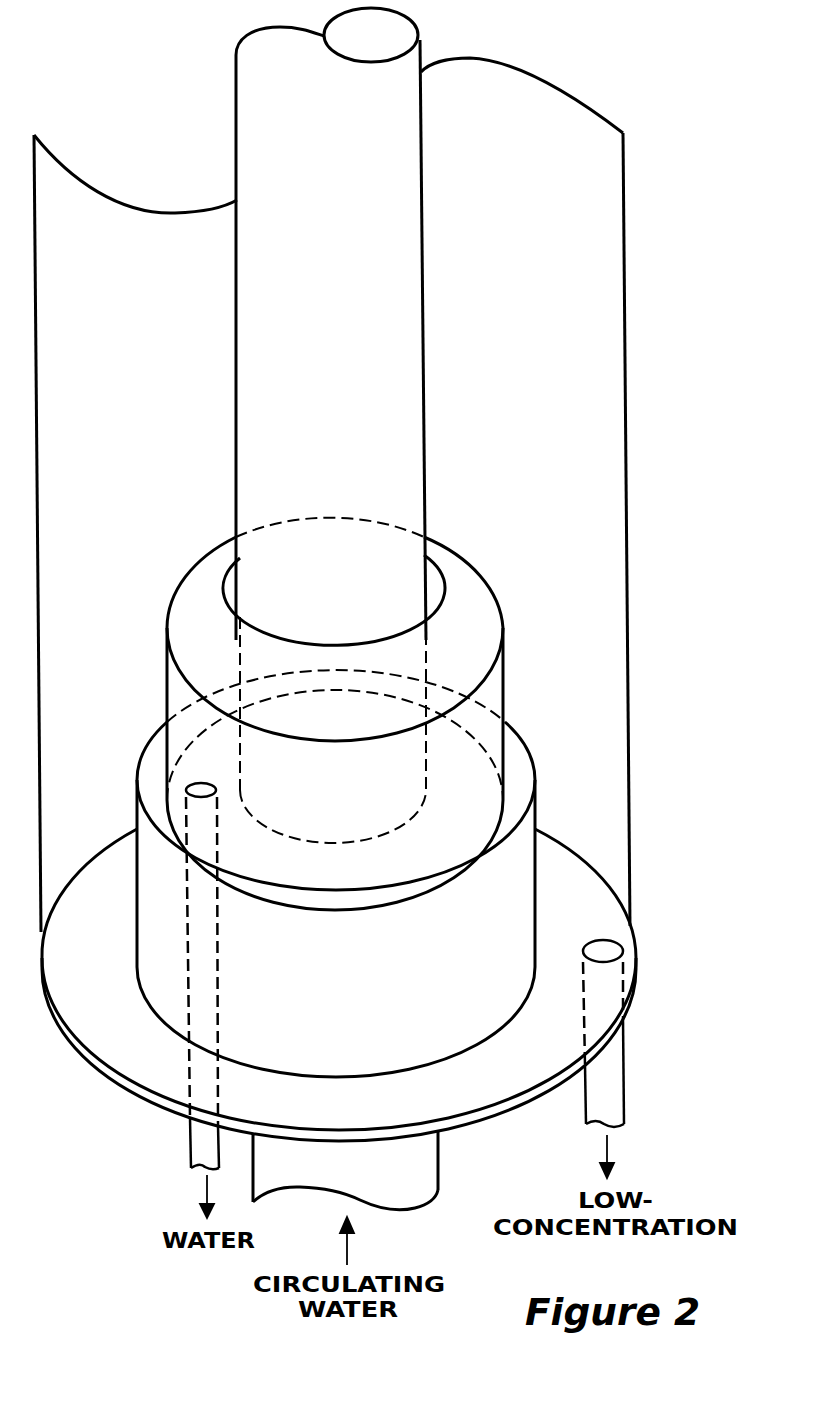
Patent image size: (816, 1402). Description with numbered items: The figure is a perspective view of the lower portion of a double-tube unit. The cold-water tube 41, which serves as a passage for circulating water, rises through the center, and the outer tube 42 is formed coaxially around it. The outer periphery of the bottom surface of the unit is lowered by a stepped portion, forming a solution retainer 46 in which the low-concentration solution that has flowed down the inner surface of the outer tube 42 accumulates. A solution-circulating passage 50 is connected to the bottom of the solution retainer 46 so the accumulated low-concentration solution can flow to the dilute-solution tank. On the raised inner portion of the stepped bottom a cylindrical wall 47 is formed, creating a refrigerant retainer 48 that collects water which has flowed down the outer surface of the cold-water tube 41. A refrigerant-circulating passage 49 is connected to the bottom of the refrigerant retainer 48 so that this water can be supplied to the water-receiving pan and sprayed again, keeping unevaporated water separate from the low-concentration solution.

The cold-water tube 41 is at (235, 105).
The outer tube 42 is at (627, 303).
The solution retainer 46 is at (591, 886).
The cylindrical wall 47 is at (505, 690).
The refrigerant retainer 48 is at (202, 760).
The refrigerant-circulating passage 49 is at (188, 1137).
The solution-circulating passage 50 is at (625, 1075).